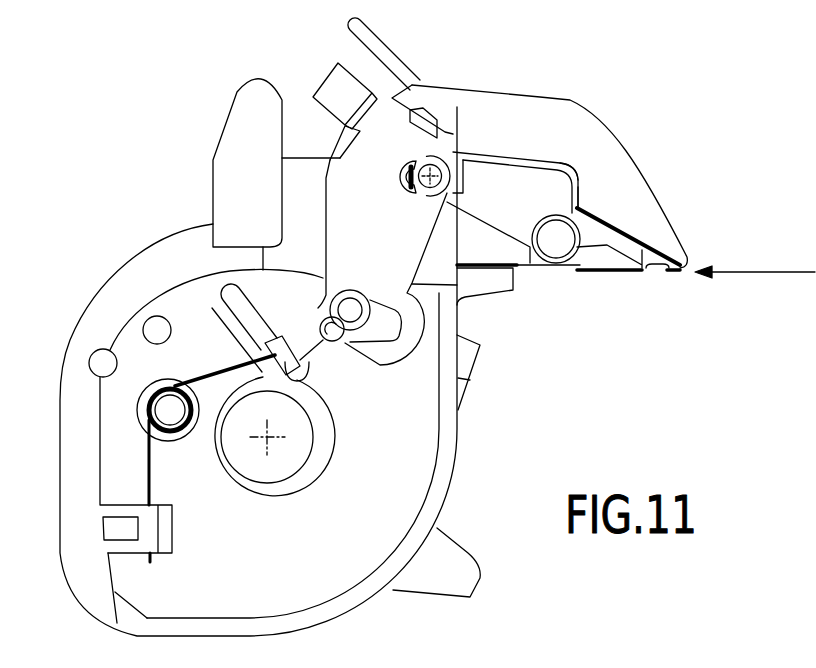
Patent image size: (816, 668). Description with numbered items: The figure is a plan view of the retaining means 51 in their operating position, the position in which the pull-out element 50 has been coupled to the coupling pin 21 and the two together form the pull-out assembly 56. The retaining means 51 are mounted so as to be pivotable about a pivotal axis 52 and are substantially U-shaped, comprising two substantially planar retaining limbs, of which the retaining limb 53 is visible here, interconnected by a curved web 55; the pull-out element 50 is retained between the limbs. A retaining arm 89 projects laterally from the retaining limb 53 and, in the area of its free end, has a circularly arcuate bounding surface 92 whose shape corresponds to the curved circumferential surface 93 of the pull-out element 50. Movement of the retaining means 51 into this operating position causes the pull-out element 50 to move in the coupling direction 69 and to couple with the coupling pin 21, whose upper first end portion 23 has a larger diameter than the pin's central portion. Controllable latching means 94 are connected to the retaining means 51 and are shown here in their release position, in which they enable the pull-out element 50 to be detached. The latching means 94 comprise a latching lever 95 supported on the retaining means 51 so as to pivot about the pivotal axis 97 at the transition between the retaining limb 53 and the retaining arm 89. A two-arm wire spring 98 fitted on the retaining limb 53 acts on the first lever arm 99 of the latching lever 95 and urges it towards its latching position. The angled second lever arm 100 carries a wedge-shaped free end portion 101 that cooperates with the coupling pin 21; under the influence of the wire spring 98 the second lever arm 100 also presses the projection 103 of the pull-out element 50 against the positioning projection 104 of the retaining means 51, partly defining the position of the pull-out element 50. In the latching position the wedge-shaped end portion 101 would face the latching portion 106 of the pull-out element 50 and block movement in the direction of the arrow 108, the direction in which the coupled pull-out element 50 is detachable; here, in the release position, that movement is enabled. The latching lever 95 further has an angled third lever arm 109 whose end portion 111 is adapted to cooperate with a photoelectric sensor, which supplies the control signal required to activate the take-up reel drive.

The coupling pin 21 is at (531, 152).
The upper first end portion 23 is at (557, 245).
The pull-out element 50 is at (637, 276).
The retaining means 51 is at (152, 241).
The pivotal axis 52 is at (270, 440).
The retaining limb 53 is at (410, 438).
The curved web 55 is at (447, 507).
The pull-out assembly 56 is at (572, 277).
The coupling direction 69 is at (682, 20).
The retaining arm 89 is at (552, 110).
The circularly arcuate bounding surface 92 is at (612, 220).
The curved circumferential surface 93 is at (576, 200).
The latching means 94 is at (308, 68).
The latching lever 95 is at (445, 136).
The pivotal axis 97 is at (424, 194).
The two-arm wire spring 98 is at (217, 363).
The first lever arm 99 is at (345, 260).
The angled second lever arm 100 is at (482, 180).
The wedge-shaped free end portion 101 is at (549, 211).
The projection 103 is at (512, 250).
The positioning projection 104 is at (505, 282).
The latching portion 106 is at (588, 257).
The arrow 108 is at (736, 270).
The third lever arm 109 is at (345, 126).
The end portion 111 is at (345, 83).